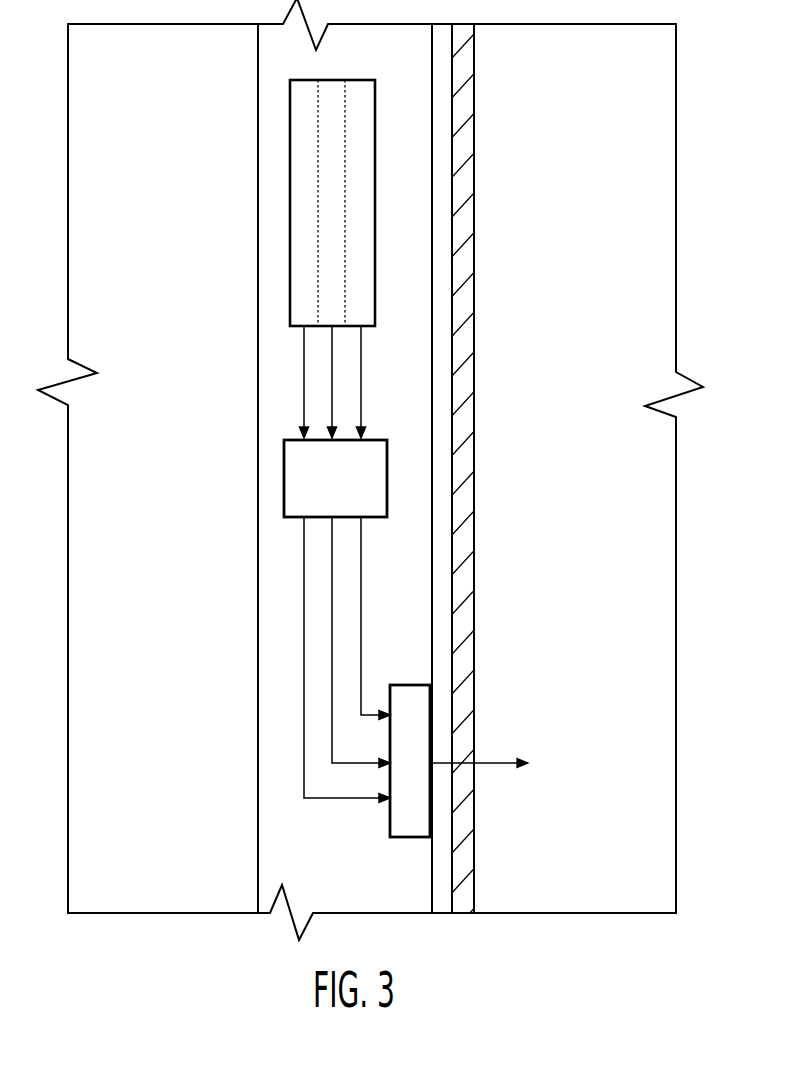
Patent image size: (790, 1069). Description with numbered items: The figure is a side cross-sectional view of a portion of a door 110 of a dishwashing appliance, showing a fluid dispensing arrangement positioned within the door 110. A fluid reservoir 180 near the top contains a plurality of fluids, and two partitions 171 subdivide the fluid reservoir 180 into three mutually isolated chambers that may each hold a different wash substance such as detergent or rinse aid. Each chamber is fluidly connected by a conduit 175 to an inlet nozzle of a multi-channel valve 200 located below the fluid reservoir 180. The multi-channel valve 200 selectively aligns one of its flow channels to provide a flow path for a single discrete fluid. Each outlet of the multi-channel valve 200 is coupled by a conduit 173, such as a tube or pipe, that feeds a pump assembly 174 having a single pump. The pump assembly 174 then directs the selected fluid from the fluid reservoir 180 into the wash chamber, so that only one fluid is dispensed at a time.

The door 110 is at (258, 718).
The partitions 171 is at (345, 170).
The conduit 173 is at (361, 633).
The pump assembly 174 is at (413, 807).
The conduit 175 is at (361, 372).
The fluid reservoir 180 is at (290, 217).
The multi-channel valve 200 is at (312, 478).